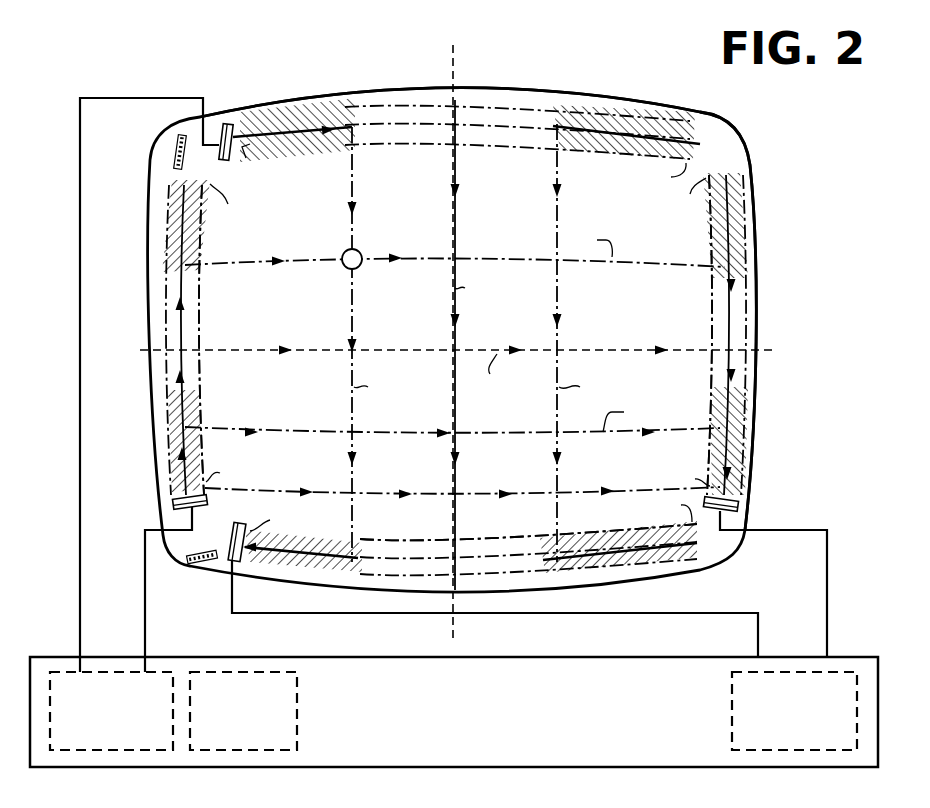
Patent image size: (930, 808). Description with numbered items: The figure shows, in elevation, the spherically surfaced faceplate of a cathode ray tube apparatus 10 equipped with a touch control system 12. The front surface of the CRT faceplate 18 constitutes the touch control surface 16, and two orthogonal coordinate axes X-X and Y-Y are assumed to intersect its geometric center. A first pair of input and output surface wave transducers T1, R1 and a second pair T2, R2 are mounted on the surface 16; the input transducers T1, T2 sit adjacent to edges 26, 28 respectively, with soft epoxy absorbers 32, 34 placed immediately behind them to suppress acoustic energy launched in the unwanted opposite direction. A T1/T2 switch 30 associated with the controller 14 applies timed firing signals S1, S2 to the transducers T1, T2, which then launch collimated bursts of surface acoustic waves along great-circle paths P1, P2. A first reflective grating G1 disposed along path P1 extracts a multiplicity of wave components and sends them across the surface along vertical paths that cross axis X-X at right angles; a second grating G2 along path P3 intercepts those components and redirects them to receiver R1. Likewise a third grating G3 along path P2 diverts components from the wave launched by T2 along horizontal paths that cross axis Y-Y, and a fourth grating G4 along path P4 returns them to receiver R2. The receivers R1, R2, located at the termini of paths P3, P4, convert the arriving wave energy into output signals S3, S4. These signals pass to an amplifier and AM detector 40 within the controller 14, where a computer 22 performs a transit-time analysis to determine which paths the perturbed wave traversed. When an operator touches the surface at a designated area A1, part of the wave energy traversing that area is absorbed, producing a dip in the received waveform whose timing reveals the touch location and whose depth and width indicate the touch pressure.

The cathode ray tube apparatus 10 is at (297, 80).
The touch control system 12 is at (812, 457).
The controller 14 is at (492, 768).
The touch control surface 16 is at (677, 238).
The CRT faceplate 18 is at (735, 127).
The computer 22 is at (297, 724).
The edge 26 is at (265, 105).
The edge 28 is at (158, 474).
The T1/T2 switch 30 is at (110, 752).
The absorber 32 is at (173, 150).
The absorber 34 is at (200, 562).
The amplifier and AM detector 40 is at (732, 724).
The input surface wave transducer T1 is at (218, 125).
The input surface wave transducer T2 is at (175, 506).
The output surface wave transducer R1 is at (230, 565).
The output surface wave transducer R2 is at (742, 505).
The touch area A1 is at (355, 249).
The first path P1 is at (537, 122).
The second path P2 is at (180, 397).
The third path P3 is at (482, 562).
The fourth path P4 is at (742, 425).
The first reflective grating G1 is at (331, 144).
The second reflective grating G2 is at (416, 542).
The third reflective grating G3 is at (200, 297).
The fourth reflective grating G4 is at (713, 303).
The input firing signal S1 is at (80, 632).
The input firing signal S2 is at (145, 632).
The output signal S3 is at (758, 632).
The output signal S4 is at (828, 632).